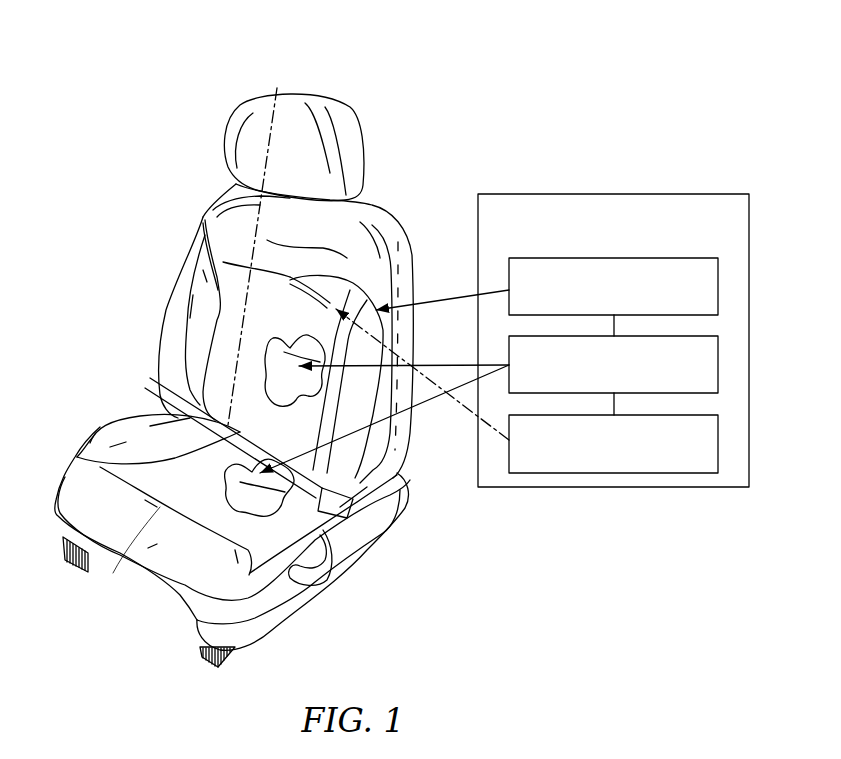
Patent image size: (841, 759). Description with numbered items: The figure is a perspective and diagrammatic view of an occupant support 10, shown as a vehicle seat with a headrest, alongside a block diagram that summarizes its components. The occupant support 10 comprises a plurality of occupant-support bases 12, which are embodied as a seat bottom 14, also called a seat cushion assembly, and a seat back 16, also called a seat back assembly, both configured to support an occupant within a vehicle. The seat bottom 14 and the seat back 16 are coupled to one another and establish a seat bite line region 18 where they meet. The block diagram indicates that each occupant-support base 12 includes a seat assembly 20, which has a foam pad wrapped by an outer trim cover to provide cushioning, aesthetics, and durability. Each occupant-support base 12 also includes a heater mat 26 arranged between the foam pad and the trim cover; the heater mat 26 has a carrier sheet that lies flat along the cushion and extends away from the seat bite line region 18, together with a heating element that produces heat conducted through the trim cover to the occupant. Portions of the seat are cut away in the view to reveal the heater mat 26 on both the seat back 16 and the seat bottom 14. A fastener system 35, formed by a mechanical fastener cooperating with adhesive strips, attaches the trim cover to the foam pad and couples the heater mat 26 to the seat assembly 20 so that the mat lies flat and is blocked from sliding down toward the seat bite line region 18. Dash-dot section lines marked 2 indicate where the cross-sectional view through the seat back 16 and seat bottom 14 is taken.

The section line 2- 2 is at (277, 88).
The occupant support 10 is at (472, 126).
The occupant-support base 12 is at (614, 194).
The seat bottom 14 is at (81, 420).
The seat back 16 is at (180, 216).
The seat bite line region 18 is at (217, 412).
The seat assembly 20 is at (718, 296).
The heater mat 26 is at (718, 364).
The fastener system 35 is at (718, 443).